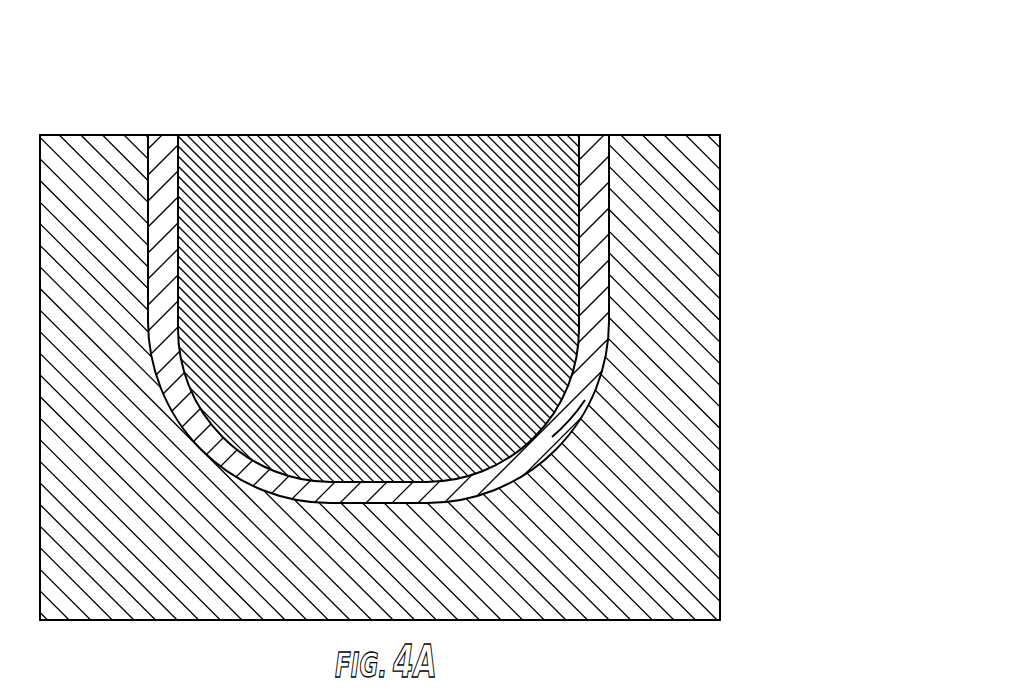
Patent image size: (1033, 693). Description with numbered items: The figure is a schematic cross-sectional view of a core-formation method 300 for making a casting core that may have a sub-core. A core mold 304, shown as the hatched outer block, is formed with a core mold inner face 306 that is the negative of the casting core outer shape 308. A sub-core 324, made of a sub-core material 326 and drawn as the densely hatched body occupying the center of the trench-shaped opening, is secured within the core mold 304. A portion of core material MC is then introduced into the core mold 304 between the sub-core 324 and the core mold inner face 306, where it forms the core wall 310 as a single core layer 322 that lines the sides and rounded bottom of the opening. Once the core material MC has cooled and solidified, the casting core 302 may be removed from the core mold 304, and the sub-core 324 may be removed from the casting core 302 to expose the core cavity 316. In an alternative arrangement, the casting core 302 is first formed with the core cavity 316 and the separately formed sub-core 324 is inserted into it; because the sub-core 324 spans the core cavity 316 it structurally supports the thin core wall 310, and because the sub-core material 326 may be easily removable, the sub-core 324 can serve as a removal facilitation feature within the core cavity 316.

The core-formation method 300 is at (782, 100).
The casting core 302 is at (162, 148).
The core mold 304 is at (678, 155).
The core mold inner face 306 is at (607, 158).
The casting core outer shape 308 is at (148, 175).
The core wall 310 is at (602, 125).
The core cavity 316 is at (325, 118).
The single core layer 322 is at (602, 297).
The sub-core 324 is at (380, 419).
The sub-core material 326 is at (352, 172).
The core material MC is at (552, 437).